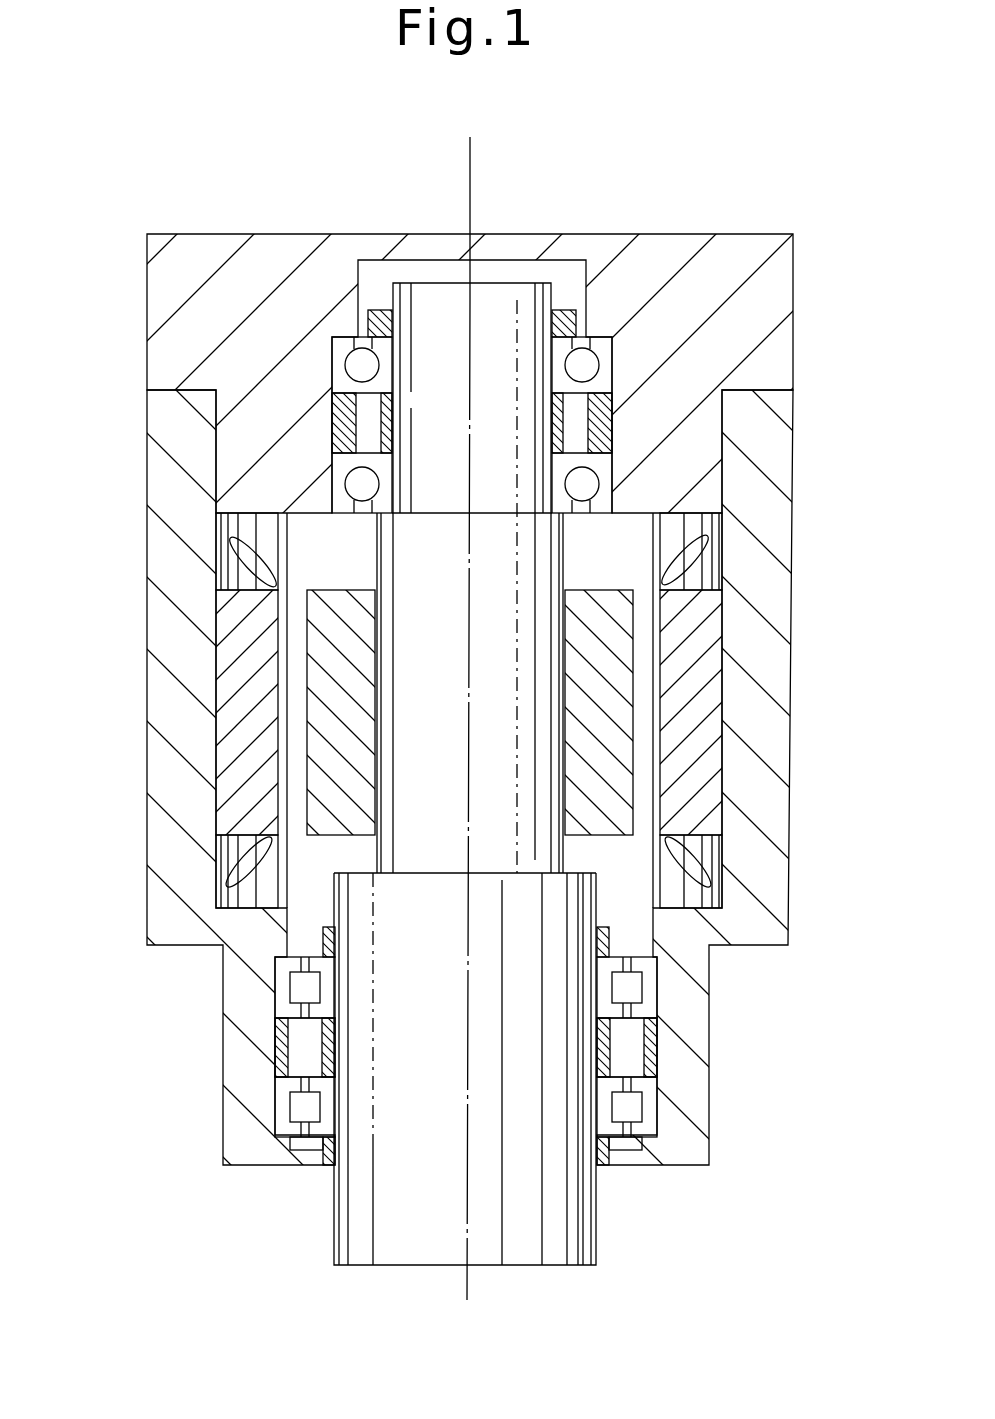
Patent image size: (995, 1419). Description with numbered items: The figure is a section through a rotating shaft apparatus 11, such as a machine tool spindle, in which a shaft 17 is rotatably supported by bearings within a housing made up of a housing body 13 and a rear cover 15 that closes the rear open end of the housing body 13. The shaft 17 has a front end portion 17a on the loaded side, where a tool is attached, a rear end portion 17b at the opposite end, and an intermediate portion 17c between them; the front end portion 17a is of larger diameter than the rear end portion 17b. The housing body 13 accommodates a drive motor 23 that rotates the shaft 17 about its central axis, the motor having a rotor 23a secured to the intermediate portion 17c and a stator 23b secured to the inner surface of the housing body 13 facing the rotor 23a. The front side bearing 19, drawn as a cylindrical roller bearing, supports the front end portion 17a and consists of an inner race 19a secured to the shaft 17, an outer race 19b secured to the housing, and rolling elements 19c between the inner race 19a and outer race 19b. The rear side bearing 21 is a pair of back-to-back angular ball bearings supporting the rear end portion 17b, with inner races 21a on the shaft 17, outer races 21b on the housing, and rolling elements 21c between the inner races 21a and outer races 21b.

The rotating shaft apparatus 11 is at (436, 699).
The housing body 13 is at (770, 479).
The rear cover 15 is at (770, 294).
The shaft 17 is at (593, 705).
The front end portion 17a is at (578, 1193).
The rear end portion 17b is at (505, 298).
The intermediate portion 17c is at (535, 666).
The front side bearing 19 is at (457, 1046).
The inner race 19a is at (328, 1087).
The outer race 19b is at (278, 1087).
The rolling elements 19c is at (309, 989).
The rear side bearing 21 is at (388, 411).
The inner races 21a is at (552, 440).
The outer races 21b is at (614, 457).
The rolling elements 21c is at (567, 357).
The drive motor 23 is at (371, 710).
The rotor 23a is at (320, 680).
The stator 23b is at (232, 727).